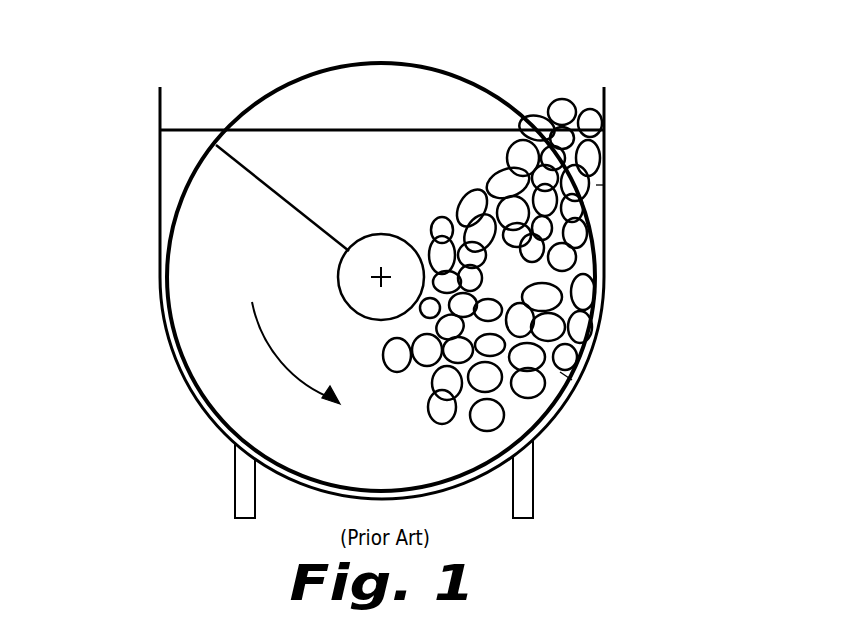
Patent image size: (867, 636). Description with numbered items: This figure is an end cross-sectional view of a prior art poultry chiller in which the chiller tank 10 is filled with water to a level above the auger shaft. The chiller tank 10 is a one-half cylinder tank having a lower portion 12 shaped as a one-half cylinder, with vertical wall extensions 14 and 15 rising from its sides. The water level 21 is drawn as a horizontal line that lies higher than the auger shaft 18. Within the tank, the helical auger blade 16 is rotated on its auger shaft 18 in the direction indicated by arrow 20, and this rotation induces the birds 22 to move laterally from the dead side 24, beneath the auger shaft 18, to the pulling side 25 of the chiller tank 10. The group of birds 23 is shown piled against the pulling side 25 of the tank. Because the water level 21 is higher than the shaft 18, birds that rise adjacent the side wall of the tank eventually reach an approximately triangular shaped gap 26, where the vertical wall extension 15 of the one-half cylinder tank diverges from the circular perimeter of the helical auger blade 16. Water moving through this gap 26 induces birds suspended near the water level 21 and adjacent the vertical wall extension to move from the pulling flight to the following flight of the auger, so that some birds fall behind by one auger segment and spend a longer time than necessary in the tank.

The chiller tank 10 is at (176, 373).
The lower portion 12 is at (193, 395).
The vertical wall extension 14 is at (173, 155).
The vertical wall extension 15 is at (608, 100).
The helical auger blade 16 is at (472, 80).
The auger shaft 18 is at (387, 240).
The arrow 20 is at (273, 358).
The water level 21 is at (467, 130).
The birds 22 is at (650, 300).
The rock load 23 is at (493, 283).
The dead side 24 is at (236, 250).
The pulling side 25 is at (566, 377).
The triangular shaped gap 26 is at (600, 185).